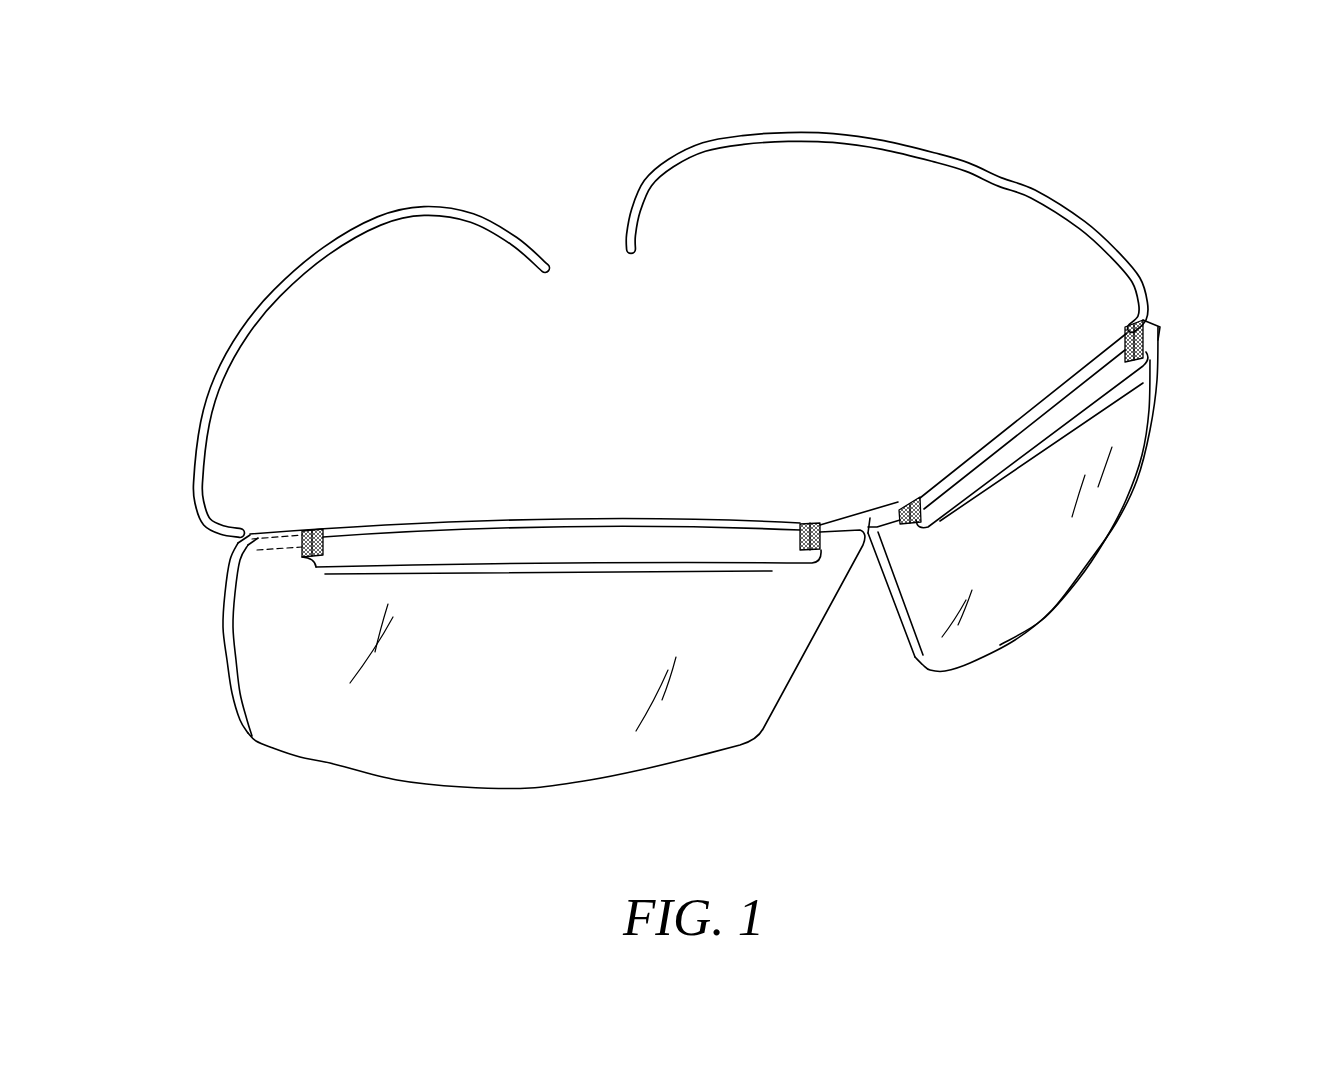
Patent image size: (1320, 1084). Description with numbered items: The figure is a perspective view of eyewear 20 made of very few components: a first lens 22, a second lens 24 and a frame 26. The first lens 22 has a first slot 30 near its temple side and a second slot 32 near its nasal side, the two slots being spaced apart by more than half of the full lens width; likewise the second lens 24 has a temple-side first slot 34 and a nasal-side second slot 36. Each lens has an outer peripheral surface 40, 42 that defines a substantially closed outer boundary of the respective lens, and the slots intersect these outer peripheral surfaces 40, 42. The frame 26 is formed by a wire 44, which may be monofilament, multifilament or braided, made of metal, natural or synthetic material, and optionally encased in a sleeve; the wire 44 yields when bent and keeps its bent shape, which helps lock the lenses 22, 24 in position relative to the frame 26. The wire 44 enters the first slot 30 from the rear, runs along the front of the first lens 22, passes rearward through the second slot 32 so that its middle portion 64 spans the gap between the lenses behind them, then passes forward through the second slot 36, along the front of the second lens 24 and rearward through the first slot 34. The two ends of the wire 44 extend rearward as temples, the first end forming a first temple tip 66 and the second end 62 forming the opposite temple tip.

The eyewear 20 is at (1242, 192).
The first lens 22 is at (491, 737).
The second lens 24 is at (1047, 575).
The frame 26 is at (1037, 173).
The first slot 30 is at (302, 552).
The second slot 32 is at (800, 536).
The first slot 34 is at (905, 498).
The second slot 36 is at (1113, 353).
The outer peripheral surface 40 is at (232, 687).
The outer peripheral surface 42 is at (897, 618).
The wire 44 is at (164, 466).
The second end 62 is at (1114, 218).
The middle portion 64 is at (820, 466).
The first temple tip 66 is at (188, 366).